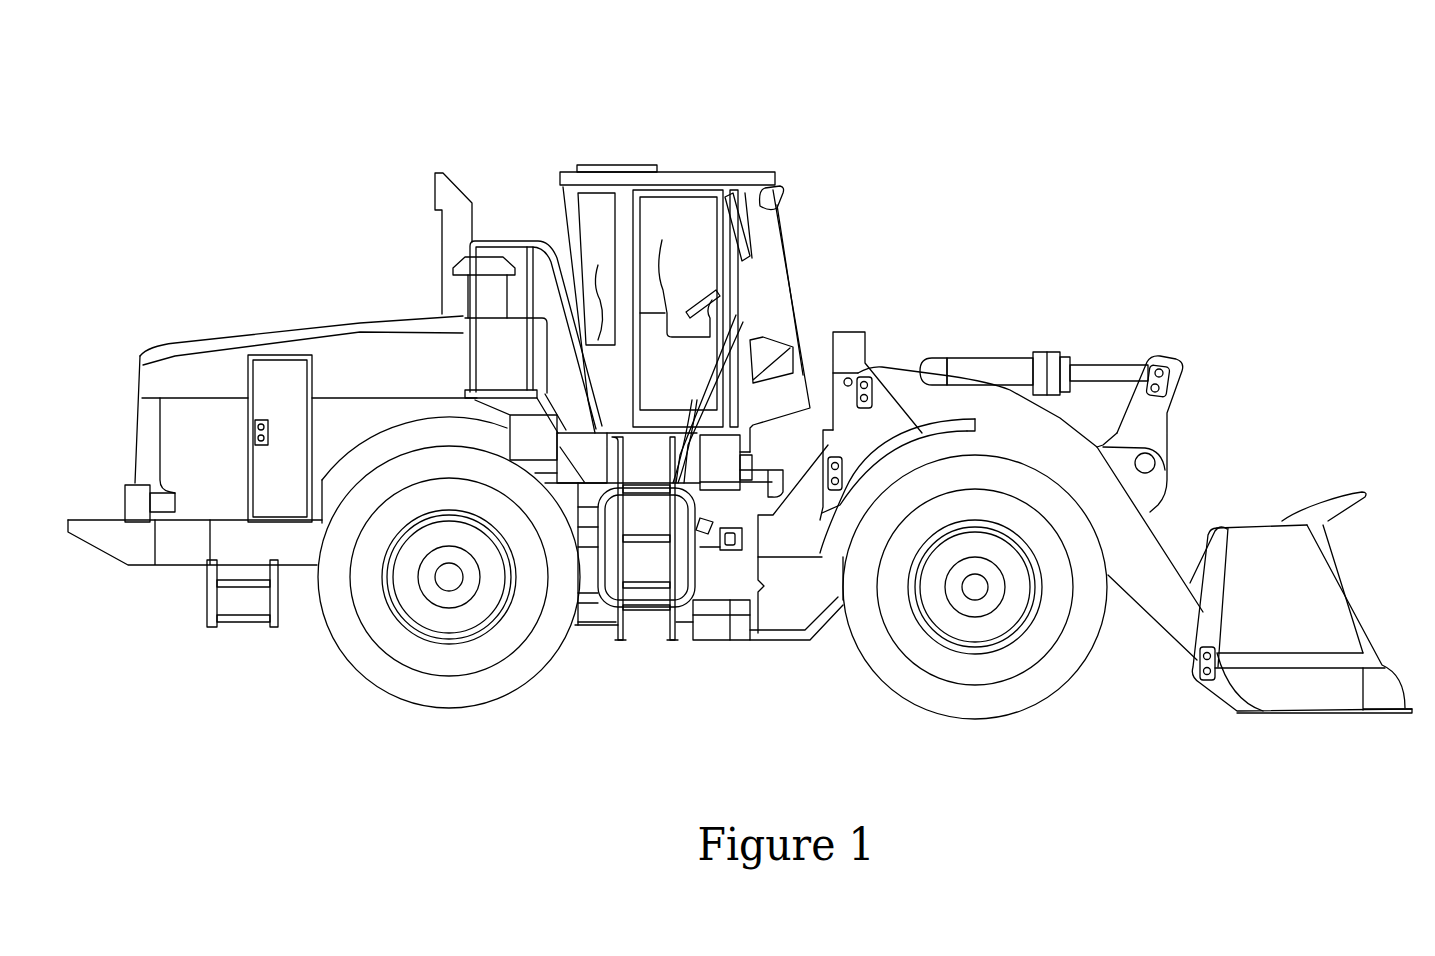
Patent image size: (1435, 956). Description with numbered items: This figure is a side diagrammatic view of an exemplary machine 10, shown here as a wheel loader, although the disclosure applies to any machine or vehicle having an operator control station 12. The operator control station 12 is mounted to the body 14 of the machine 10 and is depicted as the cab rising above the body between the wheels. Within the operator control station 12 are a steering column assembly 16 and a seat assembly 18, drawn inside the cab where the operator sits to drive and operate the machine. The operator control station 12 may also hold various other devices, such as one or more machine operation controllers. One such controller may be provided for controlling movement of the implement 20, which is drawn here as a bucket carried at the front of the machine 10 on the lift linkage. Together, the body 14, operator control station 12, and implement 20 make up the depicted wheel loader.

The machine 10 is at (1129, 128).
The operator control station 12 is at (738, 170).
The body 14 is at (648, 465).
The steering column assembly 16 is at (700, 293).
The seat assembly 18 is at (665, 313).
The implement 20 is at (1323, 502).